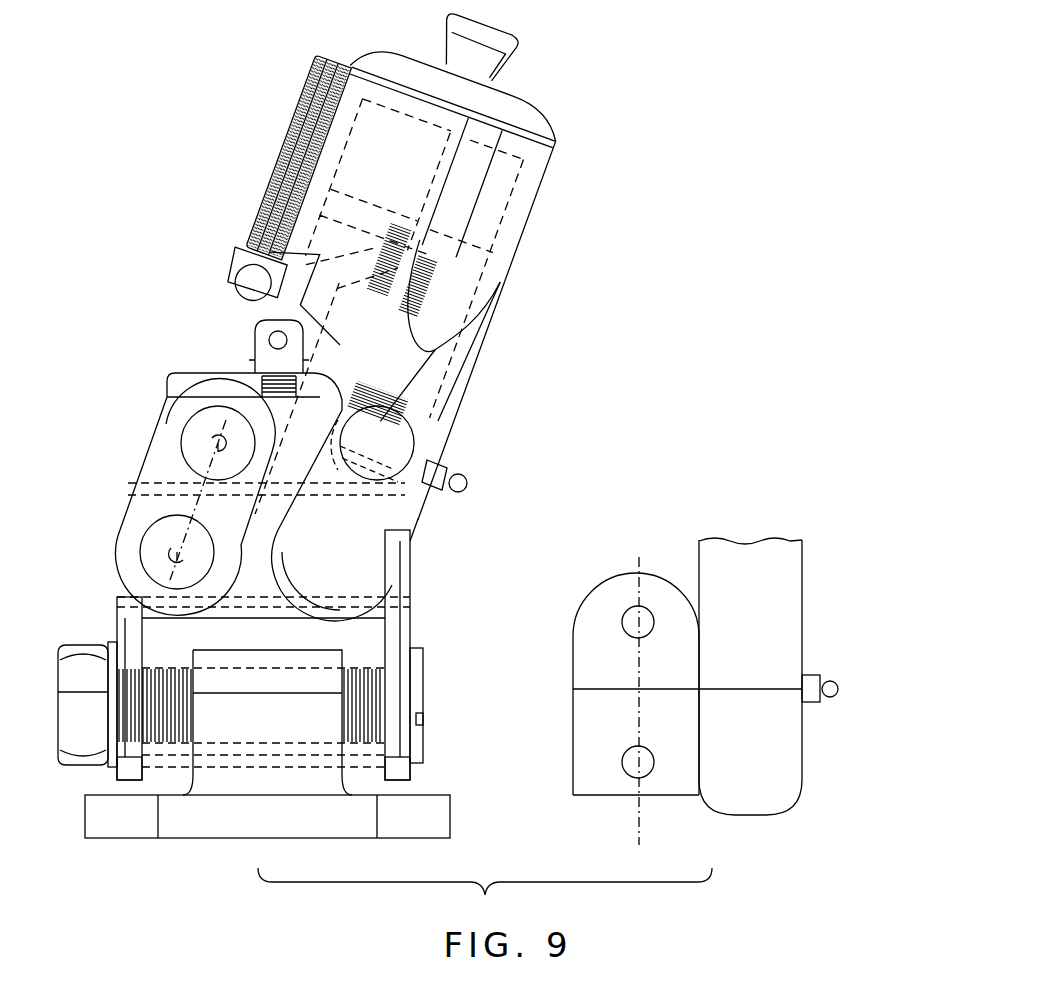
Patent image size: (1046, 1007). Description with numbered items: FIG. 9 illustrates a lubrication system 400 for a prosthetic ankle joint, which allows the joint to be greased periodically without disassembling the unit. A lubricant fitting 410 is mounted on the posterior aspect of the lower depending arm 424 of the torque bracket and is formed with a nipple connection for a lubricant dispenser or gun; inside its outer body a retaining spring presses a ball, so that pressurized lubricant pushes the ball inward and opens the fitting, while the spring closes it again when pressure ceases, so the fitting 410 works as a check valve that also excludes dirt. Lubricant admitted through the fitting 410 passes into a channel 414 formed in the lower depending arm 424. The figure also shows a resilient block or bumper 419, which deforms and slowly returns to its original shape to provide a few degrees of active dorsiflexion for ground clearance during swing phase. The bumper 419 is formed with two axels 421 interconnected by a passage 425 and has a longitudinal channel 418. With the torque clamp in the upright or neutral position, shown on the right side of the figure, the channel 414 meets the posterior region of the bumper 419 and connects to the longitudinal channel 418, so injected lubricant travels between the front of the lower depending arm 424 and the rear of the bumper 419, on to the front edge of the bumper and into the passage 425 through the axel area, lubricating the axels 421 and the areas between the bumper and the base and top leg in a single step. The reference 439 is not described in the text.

The lubrication system 400 is at (768, 498).
The lubricant fitting 410 is at (440, 482).
The channel 414 is at (390, 455).
The longitudinal channel 418 is at (676, 688).
The bumper 419 is at (280, 422).
The axels 421 is at (158, 538).
The lower depending arm 424 is at (755, 575).
The passage 425 is at (178, 480).
The base portion 439 is at (608, 728).